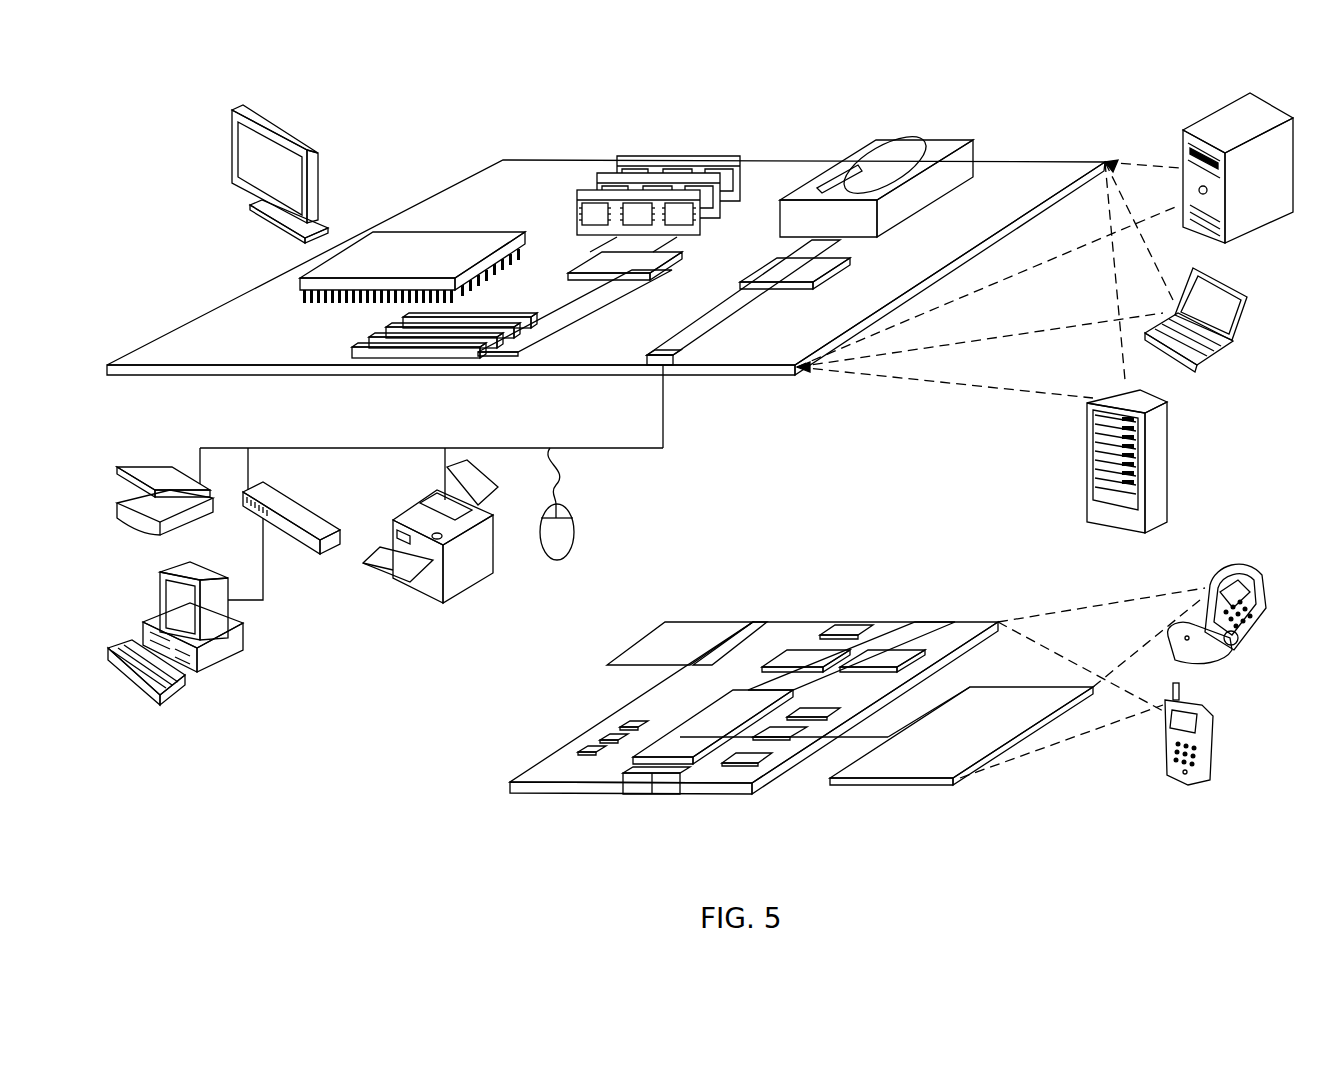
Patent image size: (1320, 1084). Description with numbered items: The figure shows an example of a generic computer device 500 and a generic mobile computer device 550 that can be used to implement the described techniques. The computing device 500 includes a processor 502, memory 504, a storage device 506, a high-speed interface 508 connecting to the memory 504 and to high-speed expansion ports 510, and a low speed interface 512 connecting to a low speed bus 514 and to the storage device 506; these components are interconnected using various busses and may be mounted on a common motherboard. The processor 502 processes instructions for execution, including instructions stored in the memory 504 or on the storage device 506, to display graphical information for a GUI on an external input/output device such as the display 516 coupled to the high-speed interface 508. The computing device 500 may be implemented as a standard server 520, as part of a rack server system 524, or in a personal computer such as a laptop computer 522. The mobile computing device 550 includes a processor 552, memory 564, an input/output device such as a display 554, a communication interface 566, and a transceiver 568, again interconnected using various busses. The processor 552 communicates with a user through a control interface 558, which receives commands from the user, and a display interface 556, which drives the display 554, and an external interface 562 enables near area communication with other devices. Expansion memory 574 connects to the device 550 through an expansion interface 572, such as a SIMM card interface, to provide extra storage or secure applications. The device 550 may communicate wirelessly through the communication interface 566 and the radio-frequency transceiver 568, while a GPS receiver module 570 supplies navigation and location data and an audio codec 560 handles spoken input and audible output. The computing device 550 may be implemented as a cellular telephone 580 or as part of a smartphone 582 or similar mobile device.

The computing device 500 is at (428, 133).
The processor 502 is at (300, 278).
The memory 504 is at (628, 155).
The storage device 506 is at (863, 142).
The high-speed interface 508 is at (597, 262).
The high-speed expansion ports 510 is at (373, 338).
The low speed interface 512 is at (777, 263).
The low speed bus 514 is at (673, 364).
The display 516 is at (232, 110).
The standard server 520 is at (1182, 143).
The laptop computer 522 is at (1247, 297).
The rack server system 524 is at (1090, 486).
The mobile computer device 550 is at (480, 800).
The processor 552 is at (683, 750).
The display 554 is at (920, 768).
The display interface 556 is at (757, 766).
The control interface 558 is at (790, 737).
The audio codec 560 is at (812, 712).
The external interface 562 is at (650, 782).
The memory 564 is at (600, 743).
The communication interface 566 is at (805, 658).
The transceiver 568 is at (883, 658).
The GPS receiver module 570 is at (857, 621).
The expansion interface 572 is at (722, 634).
The expansion memory 574 is at (656, 630).
The cellular telephone 580 is at (1221, 568).
The smartphone 582 is at (1163, 740).